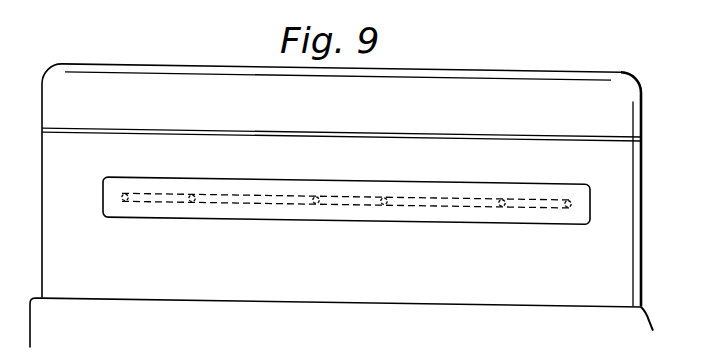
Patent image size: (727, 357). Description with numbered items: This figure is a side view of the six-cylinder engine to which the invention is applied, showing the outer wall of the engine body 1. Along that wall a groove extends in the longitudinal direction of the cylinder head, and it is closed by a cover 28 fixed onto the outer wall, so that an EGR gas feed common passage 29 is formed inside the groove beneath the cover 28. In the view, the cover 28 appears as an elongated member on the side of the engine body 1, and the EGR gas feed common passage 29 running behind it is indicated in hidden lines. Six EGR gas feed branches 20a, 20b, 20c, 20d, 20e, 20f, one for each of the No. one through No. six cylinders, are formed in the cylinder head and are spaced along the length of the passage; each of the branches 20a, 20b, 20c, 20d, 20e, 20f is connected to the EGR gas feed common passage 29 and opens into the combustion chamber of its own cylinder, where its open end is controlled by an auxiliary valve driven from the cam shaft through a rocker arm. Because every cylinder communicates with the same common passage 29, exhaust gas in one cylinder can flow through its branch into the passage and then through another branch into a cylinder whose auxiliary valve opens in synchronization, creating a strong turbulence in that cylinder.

The engine body 1 is at (627, 202).
The cover 28 is at (591, 183).
The EGR gas feed common passage 29 is at (260, 202).
The EGR gas feed branch 20a is at (123, 203).
The EGR gas feed branch 20b is at (190, 203).
The EGR gas feed branch 20c is at (316, 203).
The EGR gas feed branch 20d is at (384, 203).
The EGR gas feed branch 20e is at (500, 210).
The EGR gas feed branch 20f is at (568, 210).